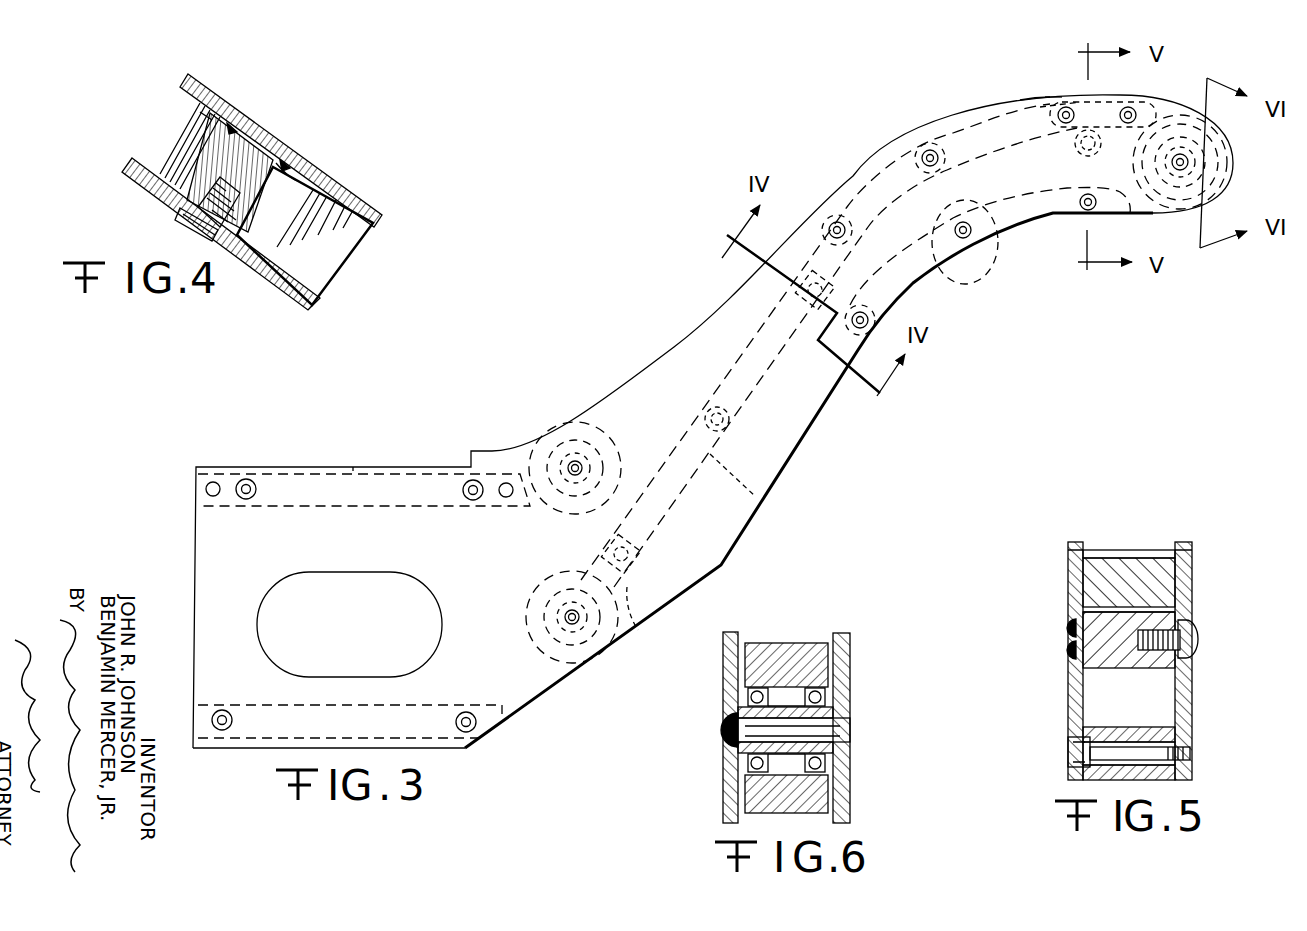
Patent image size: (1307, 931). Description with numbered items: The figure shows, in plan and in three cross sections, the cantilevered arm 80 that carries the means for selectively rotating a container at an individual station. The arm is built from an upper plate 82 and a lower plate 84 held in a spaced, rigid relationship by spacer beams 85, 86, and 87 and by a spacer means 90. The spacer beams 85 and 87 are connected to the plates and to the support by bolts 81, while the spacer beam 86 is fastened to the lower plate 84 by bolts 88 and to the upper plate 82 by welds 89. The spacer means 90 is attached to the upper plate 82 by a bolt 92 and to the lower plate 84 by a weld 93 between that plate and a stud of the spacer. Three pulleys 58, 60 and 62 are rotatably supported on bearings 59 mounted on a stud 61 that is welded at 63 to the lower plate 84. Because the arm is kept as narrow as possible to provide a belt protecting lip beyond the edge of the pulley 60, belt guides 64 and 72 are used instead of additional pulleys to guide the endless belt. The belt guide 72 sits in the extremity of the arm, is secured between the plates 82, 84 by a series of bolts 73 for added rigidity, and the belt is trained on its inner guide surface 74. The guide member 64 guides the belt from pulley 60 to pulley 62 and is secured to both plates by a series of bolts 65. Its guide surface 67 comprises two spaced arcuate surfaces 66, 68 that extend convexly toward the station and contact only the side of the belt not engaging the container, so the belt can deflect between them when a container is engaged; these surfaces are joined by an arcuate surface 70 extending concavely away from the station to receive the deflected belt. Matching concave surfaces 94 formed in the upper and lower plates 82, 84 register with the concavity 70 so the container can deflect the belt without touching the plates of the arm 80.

In FIG. 3, the pulley 58 is at (560, 663).
In FIG. 6, the bearings 59 is at (830, 690).
In FIG. 3, the pulley 60 is at (1237, 164).
In FIG. 6, the pulley 60 is at (766, 643).
In FIG. 6, the stud 61 is at (851, 730).
In FIG. 3, the pulley 62 is at (542, 436).
In FIG. 6, the weld 63 is at (722, 730).
In FIG. 3, the belt guide member 64 is at (898, 162).
In FIG. 4, the belt guide member 64 is at (226, 142).
In FIG. 5, the belt guide member 64 is at (1100, 587).
In FIG. 3, the bolts 65 is at (932, 151).
In FIG. 3, the arcuate guide surface 66 is at (1037, 98).
In FIG. 3, the guide surface 67 is at (1052, 94).
In FIG. 3, the arcuate guide surface 68 is at (1181, 100).
In FIG. 3, the concave arcuate surface 70 is at (1078, 97).
In FIG. 5, the concave arcuate surface 70 is at (1137, 550).
In FIG. 3, the belt guide 72 is at (990, 255).
In FIG. 4, the belt guide 72 is at (345, 255).
In FIG. 5, the belt guide 72 is at (1068, 764).
In FIG. 3, the bolts 73 is at (1088, 212).
In FIG. 3, the inner guide surface 74 is at (937, 280).
In FIG. 3, the cantilevered arm 80 is at (640, 362).
In FIG. 3, the bolts 81 is at (246, 479).
In FIG. 3, the upper plate 82 is at (731, 551).
In FIG. 4, the upper plate 82 is at (368, 197).
In FIG. 6, the upper plate 82 is at (851, 777).
In FIG. 5, the upper plate 82 is at (1192, 585).
In FIG. 4, the lower plate 84 is at (298, 308).
In FIG. 6, the lower plate 84 is at (722, 777).
In FIG. 5, the lower plate 84 is at (1068, 710).
In FIG. 3, the spacer beam 85 is at (243, 703).
In FIG. 3, the spacer beam 86 is at (762, 498).
In FIG. 4, the spacer beam 86 is at (190, 150).
In FIG. 3, the spacer beam 87 is at (353, 466).
In FIG. 3, the bolts 88 is at (805, 292).
In FIG. 4, the bolts 88 is at (188, 220).
In FIG. 4, the welds 89 is at (207, 117).
In FIG. 3, the spacer means 90 is at (1150, 220).
In FIG. 5, the spacer means 90 is at (1155, 673).
In FIG. 3, the bolt 92 is at (1083, 152).
In FIG. 5, the bolt 92 is at (1200, 640).
In FIG. 5, the weld 93 is at (1068, 637).
In FIG. 3, the concave surfaces 94 is at (1100, 96).
In FIG. 5, the concave surfaces 94 is at (1075, 542).